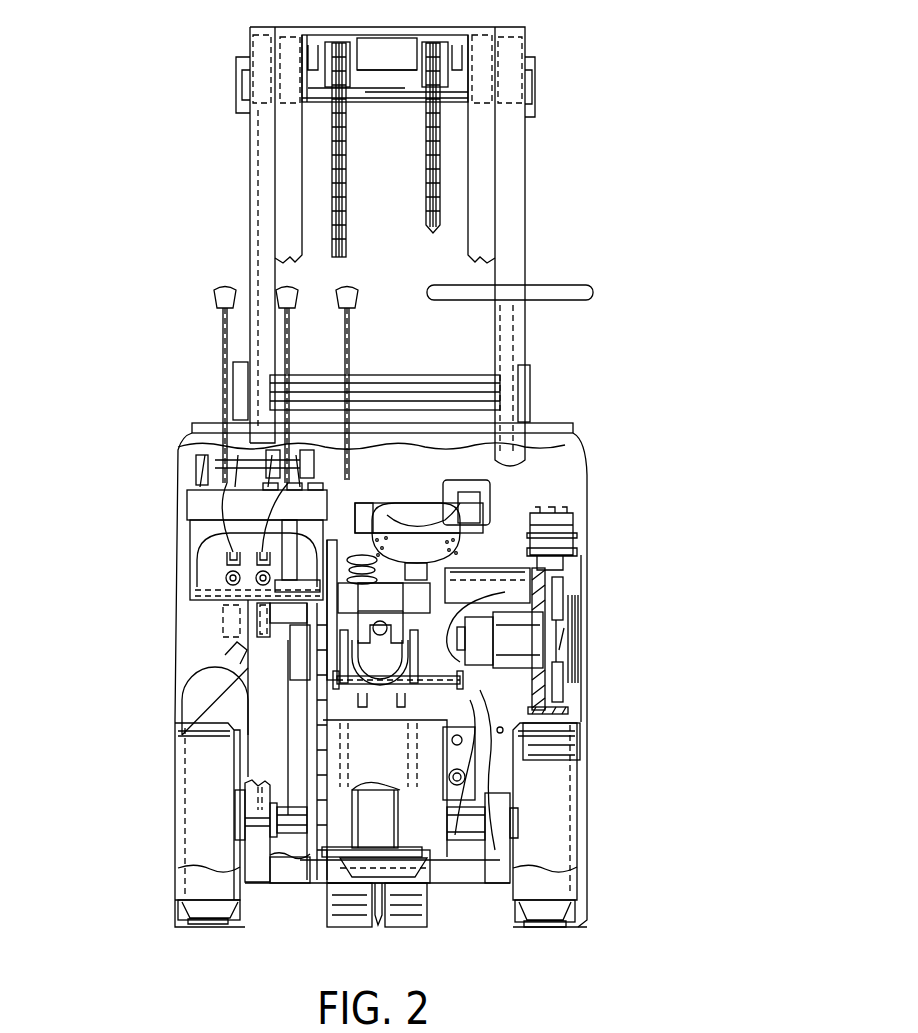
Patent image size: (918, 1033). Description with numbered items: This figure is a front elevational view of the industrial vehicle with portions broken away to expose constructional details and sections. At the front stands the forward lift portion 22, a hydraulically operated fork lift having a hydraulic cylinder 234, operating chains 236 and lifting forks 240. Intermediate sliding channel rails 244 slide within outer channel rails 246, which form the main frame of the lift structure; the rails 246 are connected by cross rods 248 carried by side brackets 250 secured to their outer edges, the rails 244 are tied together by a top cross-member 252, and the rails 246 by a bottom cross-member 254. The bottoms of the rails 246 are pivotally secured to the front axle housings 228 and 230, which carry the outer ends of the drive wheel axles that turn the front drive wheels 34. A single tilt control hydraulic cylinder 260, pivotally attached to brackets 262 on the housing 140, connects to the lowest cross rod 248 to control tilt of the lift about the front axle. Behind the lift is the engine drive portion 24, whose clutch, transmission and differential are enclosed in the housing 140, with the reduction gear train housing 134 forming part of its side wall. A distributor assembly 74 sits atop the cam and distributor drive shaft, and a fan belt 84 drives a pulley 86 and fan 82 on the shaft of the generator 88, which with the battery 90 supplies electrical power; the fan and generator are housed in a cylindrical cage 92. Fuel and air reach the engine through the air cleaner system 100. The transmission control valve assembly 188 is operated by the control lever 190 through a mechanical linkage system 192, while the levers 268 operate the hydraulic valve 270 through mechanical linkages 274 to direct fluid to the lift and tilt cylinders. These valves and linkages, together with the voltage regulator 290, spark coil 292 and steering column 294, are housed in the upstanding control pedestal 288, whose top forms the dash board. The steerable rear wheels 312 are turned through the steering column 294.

The forward lift portion 22 is at (533, 254).
The engine drive portion 24 is at (515, 592).
The front drive wheels 34 is at (583, 910).
The distributor assembly 74 is at (565, 532).
The fan 82 is at (560, 680).
The fan belt 84 is at (572, 695).
The pulley 86 is at (578, 615).
The generator 88 is at (540, 722).
The battery 90 is at (305, 520).
The cylindrical cage 92 is at (580, 760).
The air cleaner system 100 is at (452, 528).
The housing 134 is at (270, 690).
The housing 140 is at (328, 795).
The transmission control valve assembly 188 is at (455, 760).
The control lever 190 is at (352, 328).
The mechanical linkage system 192 is at (400, 765).
The axle housing 228 is at (290, 822).
The axle housing 230 is at (460, 840).
The hydraulic cylinder 234 is at (365, 825).
The operating chains 236 is at (425, 175).
The lifting forks 240 is at (208, 915).
The intermediate sliding channel rails 244 is at (290, 250).
The outer channel rails 246 is at (255, 876).
The cross rods 248 is at (372, 75).
The side brackets 250 is at (236, 82).
The top cross-member 252 is at (412, 32).
The bottom cross-member 254 is at (287, 875).
The tilt control hydraulic cylinder 260 is at (387, 652).
The brackets 262 is at (352, 690).
The levers 268 is at (287, 342).
The hydraulic valve 270 is at (222, 573).
The mechanical linkages 274 is at (228, 552).
The control pedestal 288 is at (575, 445).
The voltage regulator 290 is at (483, 510).
The spark coil 292 is at (365, 510).
The steering column 294 is at (525, 410).
The steerable rear wheels 312 is at (368, 928).